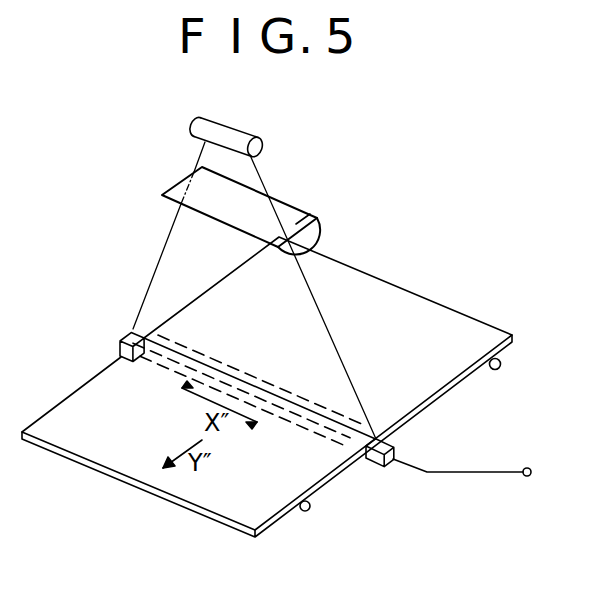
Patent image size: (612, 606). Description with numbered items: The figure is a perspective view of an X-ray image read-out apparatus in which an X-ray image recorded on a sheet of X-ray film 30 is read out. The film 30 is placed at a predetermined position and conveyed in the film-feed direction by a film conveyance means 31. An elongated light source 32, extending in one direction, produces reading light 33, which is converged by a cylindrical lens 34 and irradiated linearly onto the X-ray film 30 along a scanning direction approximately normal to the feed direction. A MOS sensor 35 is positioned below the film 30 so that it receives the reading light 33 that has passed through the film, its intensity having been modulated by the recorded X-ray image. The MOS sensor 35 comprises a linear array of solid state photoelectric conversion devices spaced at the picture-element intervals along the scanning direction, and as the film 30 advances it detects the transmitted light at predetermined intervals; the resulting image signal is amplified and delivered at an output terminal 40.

The X-ray film 30 is at (483, 320).
The film conveyance means 31 is at (501, 365).
The light source 32 is at (251, 140).
The reading light 33 is at (257, 178).
The cylindrical lens 34 is at (307, 208).
The MOS sensor 35 is at (397, 448).
The output terminal 40 is at (528, 477).